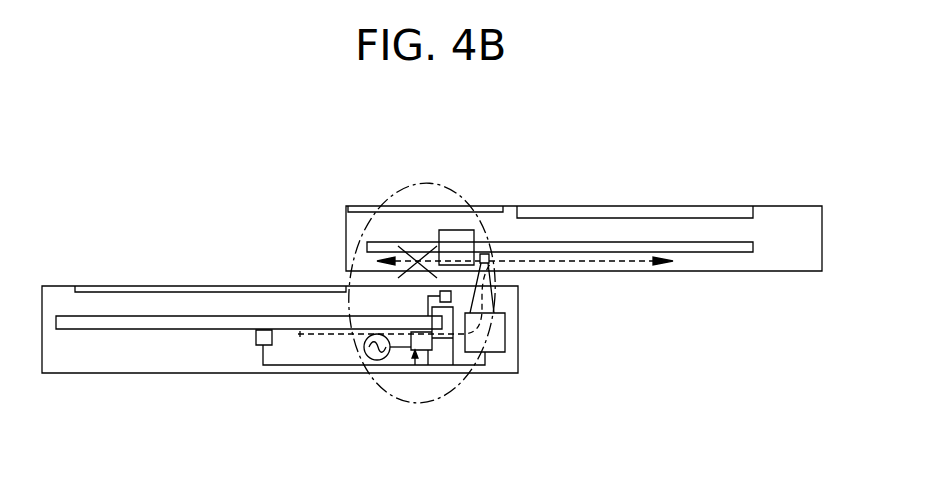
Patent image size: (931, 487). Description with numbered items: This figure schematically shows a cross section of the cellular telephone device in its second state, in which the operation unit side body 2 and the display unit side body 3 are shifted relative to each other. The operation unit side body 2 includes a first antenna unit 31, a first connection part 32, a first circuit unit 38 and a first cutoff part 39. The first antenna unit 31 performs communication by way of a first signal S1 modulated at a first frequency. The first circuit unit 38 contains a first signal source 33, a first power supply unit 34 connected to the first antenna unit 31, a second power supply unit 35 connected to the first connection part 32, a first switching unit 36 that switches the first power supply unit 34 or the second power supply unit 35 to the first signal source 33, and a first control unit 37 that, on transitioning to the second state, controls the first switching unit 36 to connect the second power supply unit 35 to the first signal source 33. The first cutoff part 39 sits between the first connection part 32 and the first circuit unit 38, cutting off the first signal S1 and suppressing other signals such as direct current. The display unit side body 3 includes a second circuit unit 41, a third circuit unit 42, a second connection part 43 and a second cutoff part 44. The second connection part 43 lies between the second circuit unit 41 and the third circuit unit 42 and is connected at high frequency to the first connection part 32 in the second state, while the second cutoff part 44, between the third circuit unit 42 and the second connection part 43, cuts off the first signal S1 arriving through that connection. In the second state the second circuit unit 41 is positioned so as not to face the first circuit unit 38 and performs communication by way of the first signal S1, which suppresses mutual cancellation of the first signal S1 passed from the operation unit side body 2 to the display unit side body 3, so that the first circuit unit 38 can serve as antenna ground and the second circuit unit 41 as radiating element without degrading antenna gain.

The operation unit side body 2 is at (72, 360).
The display unit side body 3 is at (800, 228).
The first antenna unit 31 is at (489, 336).
The first connection part 32 is at (496, 302).
The first signal source 33 is at (385, 356).
The first power supply unit 34 is at (470, 366).
The second power supply unit 35 is at (418, 366).
The first switching unit 36 is at (422, 352).
The first control unit 37 is at (257, 345).
The first circuit unit 38 is at (158, 323).
The first cutoff part 39 is at (427, 296).
The second circuit unit 41 is at (740, 253).
The third circuit unit 42 is at (401, 247).
The second connection part 43 is at (486, 253).
The second cutoff part 44 is at (455, 248).
The first signal S1 is at (302, 338).